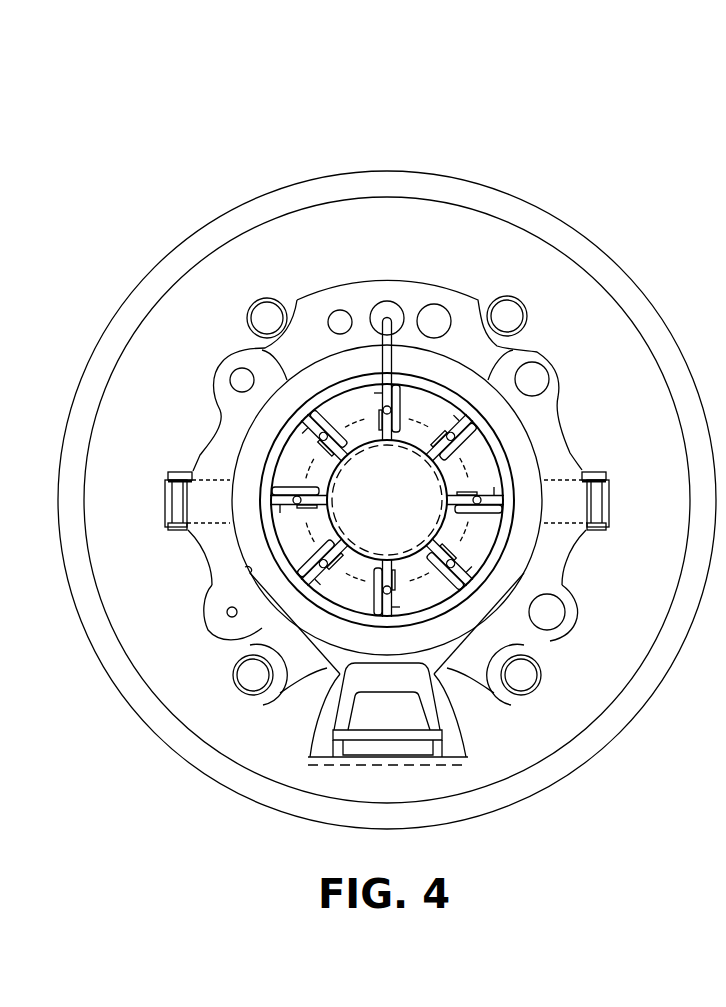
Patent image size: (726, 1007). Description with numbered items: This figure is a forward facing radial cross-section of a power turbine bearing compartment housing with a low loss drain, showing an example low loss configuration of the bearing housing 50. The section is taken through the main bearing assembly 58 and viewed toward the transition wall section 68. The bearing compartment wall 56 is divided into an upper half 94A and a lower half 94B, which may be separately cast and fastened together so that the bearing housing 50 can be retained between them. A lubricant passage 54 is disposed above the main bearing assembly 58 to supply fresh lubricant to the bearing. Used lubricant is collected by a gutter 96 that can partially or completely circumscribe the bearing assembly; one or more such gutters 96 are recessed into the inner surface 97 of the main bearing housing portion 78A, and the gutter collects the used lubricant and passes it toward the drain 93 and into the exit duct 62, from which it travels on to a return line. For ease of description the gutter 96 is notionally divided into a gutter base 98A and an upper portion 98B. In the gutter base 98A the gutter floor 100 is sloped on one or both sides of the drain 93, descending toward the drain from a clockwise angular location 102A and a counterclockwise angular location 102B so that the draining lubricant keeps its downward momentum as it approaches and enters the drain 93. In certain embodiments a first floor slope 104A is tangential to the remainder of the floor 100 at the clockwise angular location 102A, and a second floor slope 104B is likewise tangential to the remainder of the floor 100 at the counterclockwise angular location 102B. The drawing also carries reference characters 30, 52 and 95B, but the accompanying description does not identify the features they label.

The brush holder assembly 30 is at (612, 148).
The housing end plate 52 is at (345, 135).
The bearing compartment wall 56 is at (468, 330).
The bearing housing 50 is at (548, 443).
The transition wall section 68 is at (347, 262).
The lubricant passage 54 is at (388, 308).
The main bearing housing portion 78A is at (263, 348).
The alignment hole 95B is at (540, 378).
The main bearing assembly 58 is at (374, 387).
The gutter base 98A is at (462, 379).
The inner surface 97 is at (290, 441).
The gutter upper portion 98B is at (372, 649).
The upper half 94A is at (216, 458).
The lower half 94B is at (210, 533).
The gutter floor 100 is at (243, 568).
The gutter 96 is at (530, 549).
The clockwise angular location 102A is at (247, 642).
The counterclockwise angular location 102B is at (497, 622).
The first floor slope 104A is at (280, 693).
The second floor slope 104B is at (450, 700).
The drain 93 is at (463, 700).
The exit duct 62 is at (400, 724).